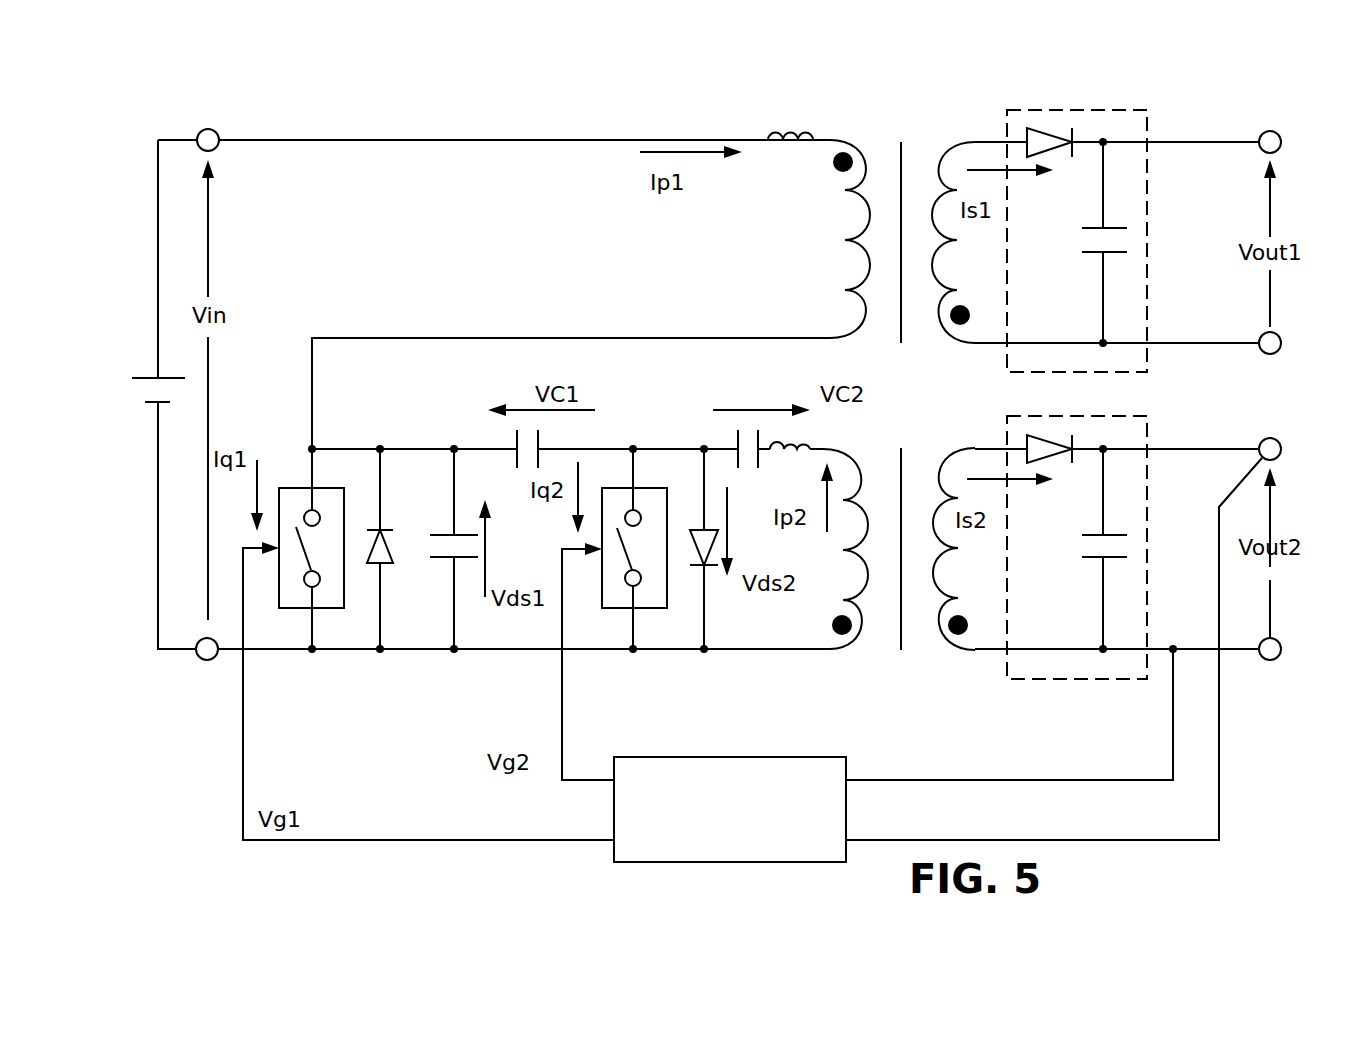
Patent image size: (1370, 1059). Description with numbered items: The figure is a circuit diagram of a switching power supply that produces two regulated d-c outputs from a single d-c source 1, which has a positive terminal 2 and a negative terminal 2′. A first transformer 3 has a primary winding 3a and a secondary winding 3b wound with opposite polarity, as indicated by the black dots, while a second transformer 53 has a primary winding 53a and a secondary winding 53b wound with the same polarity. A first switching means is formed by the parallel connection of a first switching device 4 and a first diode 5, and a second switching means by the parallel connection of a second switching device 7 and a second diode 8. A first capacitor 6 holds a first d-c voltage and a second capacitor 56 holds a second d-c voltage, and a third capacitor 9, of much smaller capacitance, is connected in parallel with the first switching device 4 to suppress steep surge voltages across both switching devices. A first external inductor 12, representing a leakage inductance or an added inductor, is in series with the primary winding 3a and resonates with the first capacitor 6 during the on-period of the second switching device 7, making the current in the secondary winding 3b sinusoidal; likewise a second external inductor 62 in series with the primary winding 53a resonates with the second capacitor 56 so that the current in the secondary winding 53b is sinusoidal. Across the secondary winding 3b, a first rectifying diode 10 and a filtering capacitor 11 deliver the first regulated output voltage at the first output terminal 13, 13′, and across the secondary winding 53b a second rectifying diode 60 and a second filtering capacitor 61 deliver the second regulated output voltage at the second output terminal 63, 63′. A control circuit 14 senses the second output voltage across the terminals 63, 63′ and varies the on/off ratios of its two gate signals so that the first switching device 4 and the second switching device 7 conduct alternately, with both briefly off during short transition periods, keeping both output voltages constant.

The d-c source 1 is at (143, 390).
The positive terminal 2 is at (228, 121).
The negative terminal 2' is at (194, 679).
The first transformer 3 is at (870, 220).
The primary winding 3a is at (855, 268).
The secondary winding 3b is at (945, 160).
The first switching device 4 is at (283, 608).
The first diode 5 is at (377, 563).
The first capacitor 6 is at (528, 428).
The second switching device 7 is at (618, 608).
The second diode 8 is at (697, 566).
The third capacitor 9 is at (440, 558).
The first rectifying diode 10 is at (1040, 137).
The filtering capacitor 11 is at (1127, 238).
The first external inductor 12 is at (780, 132).
The first output terminal 13 is at (1295, 125).
The first output terminal 13' is at (1301, 328).
The control circuit 14 is at (846, 815).
The second transformer 53 is at (922, 586).
The primary winding 53a is at (848, 651).
The secondary winding 53b is at (972, 607).
The second capacitor 56 is at (748, 428).
The second rectifying diode 60 is at (1045, 455).
The smoothing capacitor 61 is at (1082, 545).
The second external inductor 62 is at (818, 442).
The second output terminal 63 is at (1303, 435).
The second output terminal 63' is at (1304, 640).